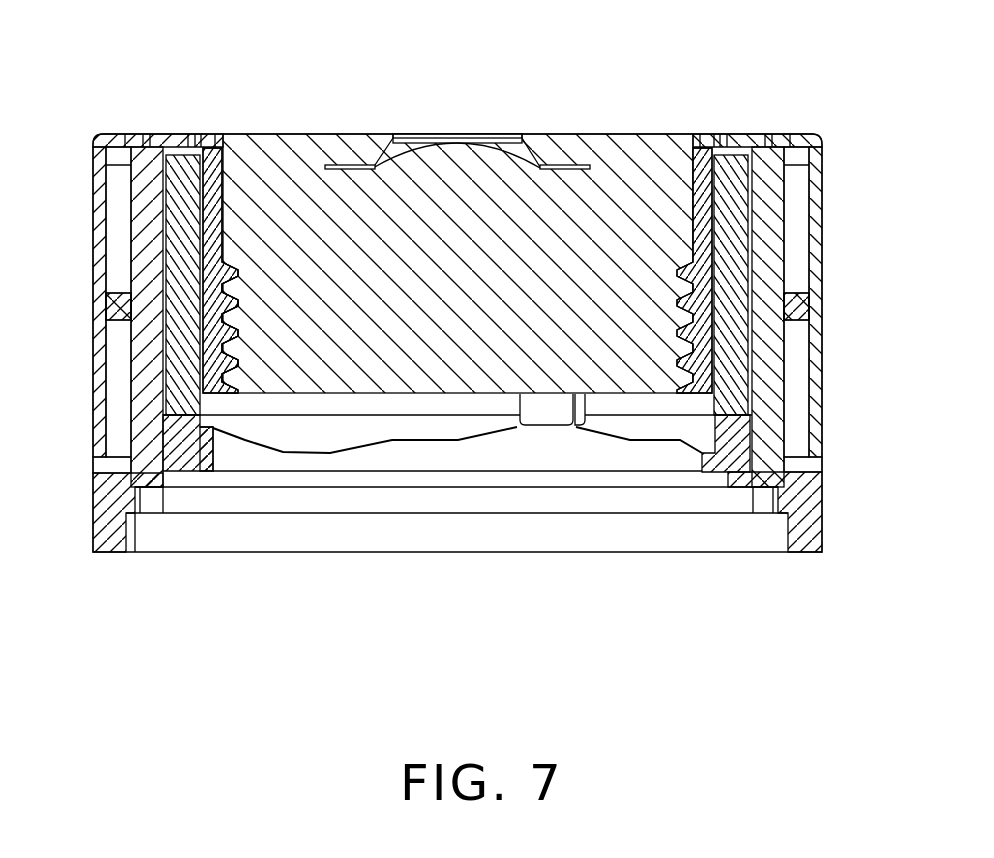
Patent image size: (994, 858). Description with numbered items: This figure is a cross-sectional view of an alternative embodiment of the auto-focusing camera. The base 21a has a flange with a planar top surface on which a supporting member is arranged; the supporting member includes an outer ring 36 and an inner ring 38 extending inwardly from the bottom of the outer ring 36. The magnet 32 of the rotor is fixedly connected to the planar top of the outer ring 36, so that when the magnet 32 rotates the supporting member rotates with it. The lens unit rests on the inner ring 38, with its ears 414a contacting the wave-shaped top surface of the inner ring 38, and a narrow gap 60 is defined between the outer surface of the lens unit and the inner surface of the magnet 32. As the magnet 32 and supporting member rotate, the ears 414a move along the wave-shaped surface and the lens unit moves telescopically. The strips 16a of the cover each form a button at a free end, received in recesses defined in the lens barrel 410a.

The strip 16a is at (732, 143).
The base 21a is at (803, 523).
The magnet 32 is at (180, 198).
The outer ring 36 is at (187, 422).
The inner ring 38 is at (203, 430).
The narrow gap 60 is at (203, 263).
The lens barrel 410a is at (208, 203).
The ear 414a is at (543, 412).